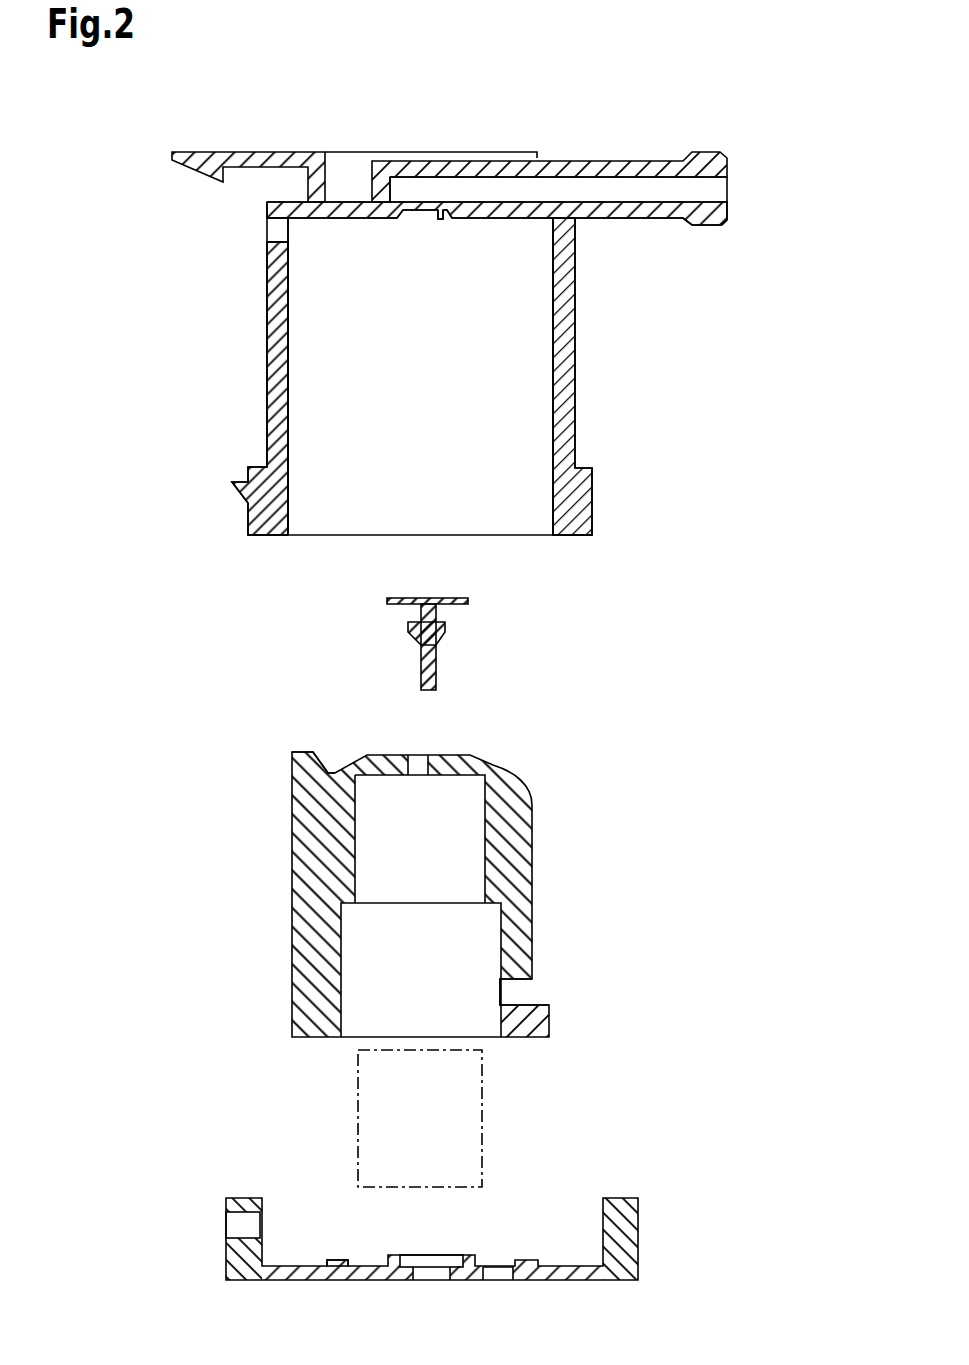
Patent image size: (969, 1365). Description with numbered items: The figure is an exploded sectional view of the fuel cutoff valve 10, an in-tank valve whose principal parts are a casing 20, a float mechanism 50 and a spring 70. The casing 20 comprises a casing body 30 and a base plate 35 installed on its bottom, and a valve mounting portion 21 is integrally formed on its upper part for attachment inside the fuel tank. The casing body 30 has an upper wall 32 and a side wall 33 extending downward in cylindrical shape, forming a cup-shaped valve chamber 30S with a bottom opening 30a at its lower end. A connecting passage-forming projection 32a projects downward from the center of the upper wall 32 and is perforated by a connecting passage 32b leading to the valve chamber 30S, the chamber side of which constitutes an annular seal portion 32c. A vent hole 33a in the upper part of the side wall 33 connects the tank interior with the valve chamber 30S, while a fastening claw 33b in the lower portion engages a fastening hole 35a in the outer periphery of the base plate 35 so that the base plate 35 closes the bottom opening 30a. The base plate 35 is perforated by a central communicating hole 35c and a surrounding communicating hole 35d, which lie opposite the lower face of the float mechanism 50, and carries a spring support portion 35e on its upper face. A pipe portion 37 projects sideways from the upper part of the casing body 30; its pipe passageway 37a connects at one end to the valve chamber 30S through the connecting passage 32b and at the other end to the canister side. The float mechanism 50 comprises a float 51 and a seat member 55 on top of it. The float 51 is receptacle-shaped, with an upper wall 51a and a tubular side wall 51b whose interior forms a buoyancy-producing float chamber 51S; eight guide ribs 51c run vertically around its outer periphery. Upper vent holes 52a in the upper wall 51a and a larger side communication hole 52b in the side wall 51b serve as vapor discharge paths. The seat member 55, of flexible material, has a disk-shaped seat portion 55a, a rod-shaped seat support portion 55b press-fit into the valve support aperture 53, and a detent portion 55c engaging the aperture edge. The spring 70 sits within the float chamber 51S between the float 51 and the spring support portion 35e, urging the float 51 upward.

The fuel cutoff valve 10 is at (795, 119).
The casing 20 is at (398, 776).
The valve mounting portion 21 is at (233, 152).
The casing body 30 is at (157, 207).
The valve chamber 30S is at (523, 387).
The bottom opening 30a is at (523, 535).
The upper wall 32 is at (263, 203).
The connecting passage-forming projection 32a is at (446, 216).
The connecting passage 32b is at (417, 214).
The annular seal portion 32c is at (441, 221).
The side wall 33 is at (267, 282).
The vent hole 33a is at (280, 228).
The fastening claw 33b is at (237, 492).
The base plate 35 is at (227, 1265).
The fastening hole 35a is at (235, 1227).
The central communicating hole 35c is at (438, 1277).
The communicating hole 35d is at (497, 1277).
The spring support portion 35e is at (354, 1261).
The pipe portion 37 is at (580, 160).
The pipe passageway 37a is at (620, 182).
The float mechanism 50 is at (673, 623).
The float 51 is at (630, 745).
The upper wall 51a is at (474, 762).
The side wall 51b is at (535, 815).
The guide ribs 51c is at (292, 947).
The float chamber 51S is at (387, 847).
The upper vent holes 52a is at (372, 765).
The side communication hole 52b is at (515, 993).
The valve support aperture 53 is at (419, 763).
The seat member 55 is at (622, 577).
The seat portion 55a is at (458, 597).
The seat support portion 55b is at (437, 662).
The detent portion 55c is at (448, 625).
The spring 70 is at (482, 1110).